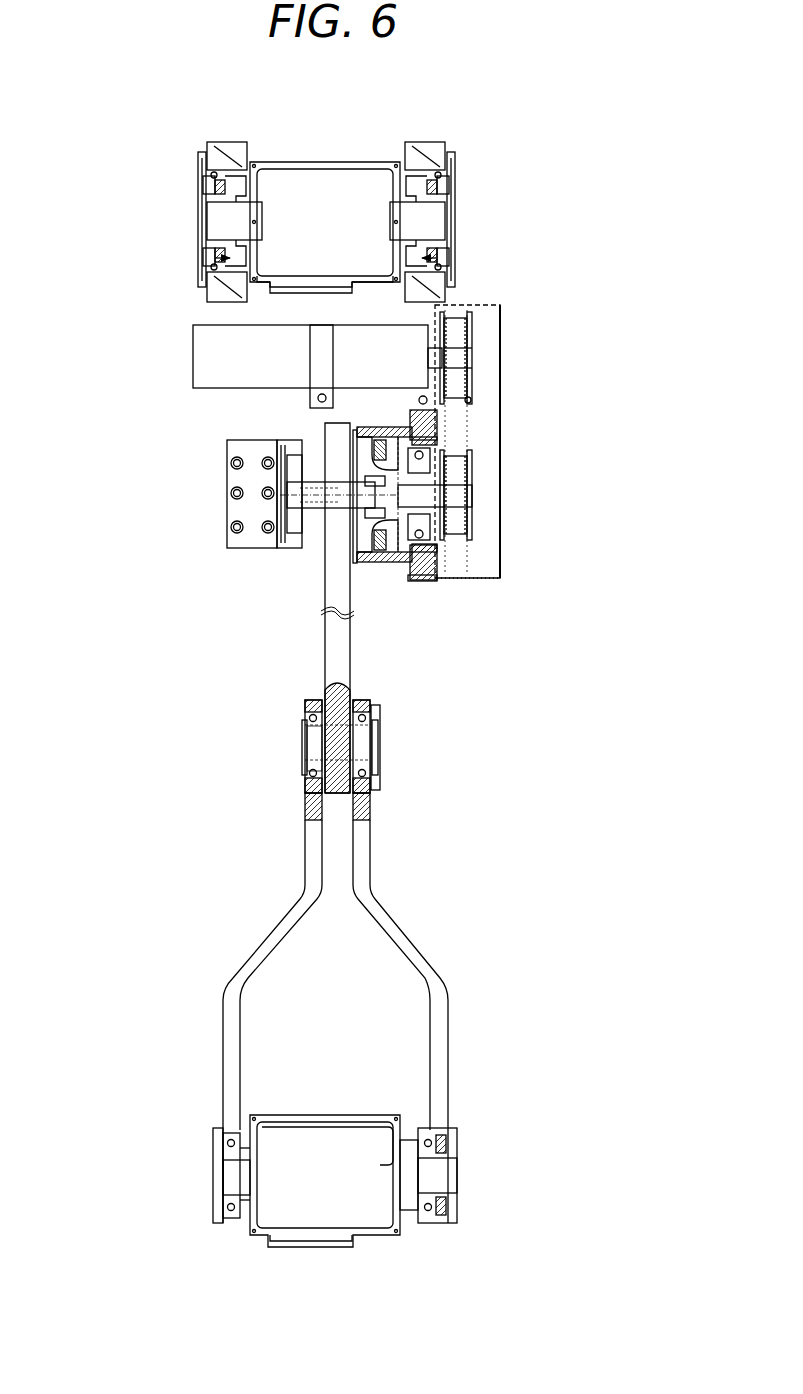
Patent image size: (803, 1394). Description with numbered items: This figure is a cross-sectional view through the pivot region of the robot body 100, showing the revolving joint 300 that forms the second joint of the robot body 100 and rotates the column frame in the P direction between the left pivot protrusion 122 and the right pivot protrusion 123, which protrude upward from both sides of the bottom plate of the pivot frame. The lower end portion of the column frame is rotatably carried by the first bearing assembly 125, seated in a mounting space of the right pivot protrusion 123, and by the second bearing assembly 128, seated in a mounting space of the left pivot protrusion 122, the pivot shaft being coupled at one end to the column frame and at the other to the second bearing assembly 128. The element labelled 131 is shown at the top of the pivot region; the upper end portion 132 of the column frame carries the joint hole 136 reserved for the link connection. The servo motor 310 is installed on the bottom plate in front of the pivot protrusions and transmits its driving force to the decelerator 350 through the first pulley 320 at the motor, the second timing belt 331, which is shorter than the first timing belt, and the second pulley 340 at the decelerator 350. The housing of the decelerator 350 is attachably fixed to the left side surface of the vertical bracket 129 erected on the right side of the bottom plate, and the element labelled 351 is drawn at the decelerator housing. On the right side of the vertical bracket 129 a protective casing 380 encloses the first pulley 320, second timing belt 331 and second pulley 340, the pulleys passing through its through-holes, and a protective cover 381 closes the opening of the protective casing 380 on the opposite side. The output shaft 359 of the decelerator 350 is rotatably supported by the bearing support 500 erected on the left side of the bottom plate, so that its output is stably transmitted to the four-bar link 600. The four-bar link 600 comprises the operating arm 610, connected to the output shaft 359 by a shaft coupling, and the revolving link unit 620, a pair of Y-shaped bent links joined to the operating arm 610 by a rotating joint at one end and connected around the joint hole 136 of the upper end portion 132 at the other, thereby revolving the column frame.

The robot body 100 is at (347, 78).
The left pivot protrusion 122 is at (228, 142).
The right pivot protrusion 123 is at (428, 142).
The first bearing assembly 125 is at (420, 185).
The second bearing assembly 128 is at (203, 183).
The vertical bracket 129 is at (425, 587).
The upper body 131 is at (327, 163).
The upper end portion 132 is at (325, 1117).
The joint hole 136 is at (378, 1160).
The revolving joint 300 is at (478, 220).
The servo motor 310 is at (194, 357).
The first pulley 320 is at (472, 380).
The second timing belt 331 is at (467, 427).
The second pulley 340 is at (472, 520).
The decelerator 350 is at (392, 570).
The housing flange 351 is at (428, 497).
The output shaft 359 is at (342, 495).
The protective casing 380 is at (450, 578).
The protective cover 381 is at (500, 475).
The bearing support 500 is at (276, 563).
The four-bar link 600 is at (124, 627).
The operating arm 610 is at (327, 638).
The revolving link unit 620 is at (312, 848).